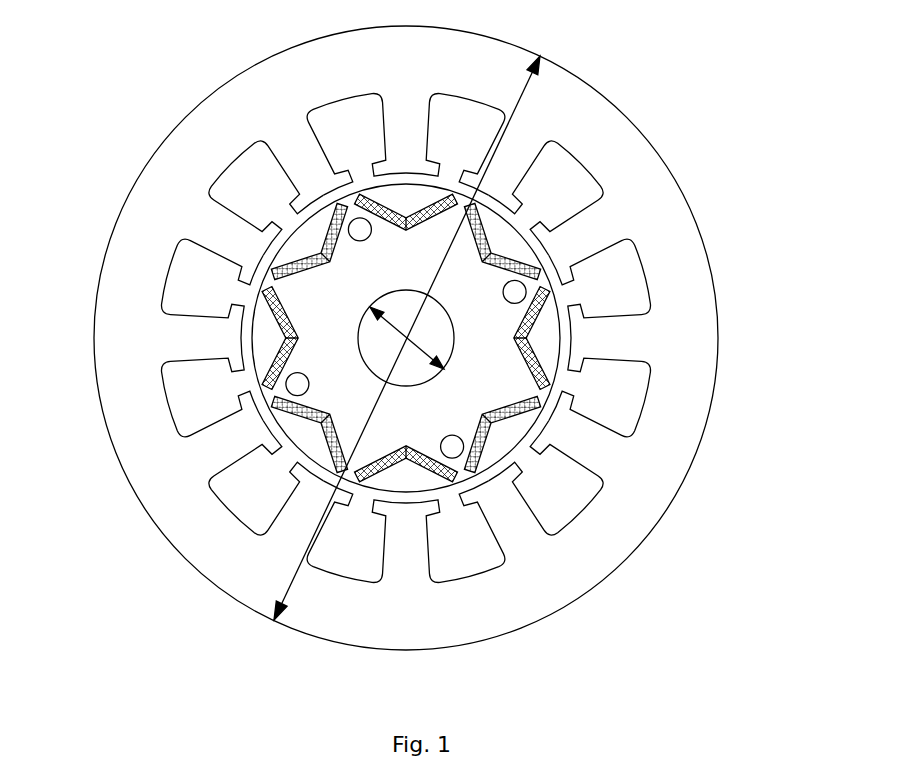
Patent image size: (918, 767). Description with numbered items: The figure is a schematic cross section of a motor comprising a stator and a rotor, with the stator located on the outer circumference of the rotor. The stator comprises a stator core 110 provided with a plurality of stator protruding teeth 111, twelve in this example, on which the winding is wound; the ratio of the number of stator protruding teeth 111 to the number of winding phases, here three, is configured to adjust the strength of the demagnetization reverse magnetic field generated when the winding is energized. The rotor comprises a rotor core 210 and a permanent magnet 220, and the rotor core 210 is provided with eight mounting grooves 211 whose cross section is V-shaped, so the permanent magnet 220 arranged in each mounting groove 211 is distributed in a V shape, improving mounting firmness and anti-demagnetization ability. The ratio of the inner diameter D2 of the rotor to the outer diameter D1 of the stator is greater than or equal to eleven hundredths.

The stator core 110 is at (237, 120).
The stator protruding tooth 111 is at (222, 237).
The rotor core 210 is at (487, 347).
The mounting groove 211 is at (488, 253).
The permanent magnet 220 is at (485, 222).
The outer diameter of the stator D1 is at (432, 320).
The inner diameter of the rotor D2 is at (370, 307).